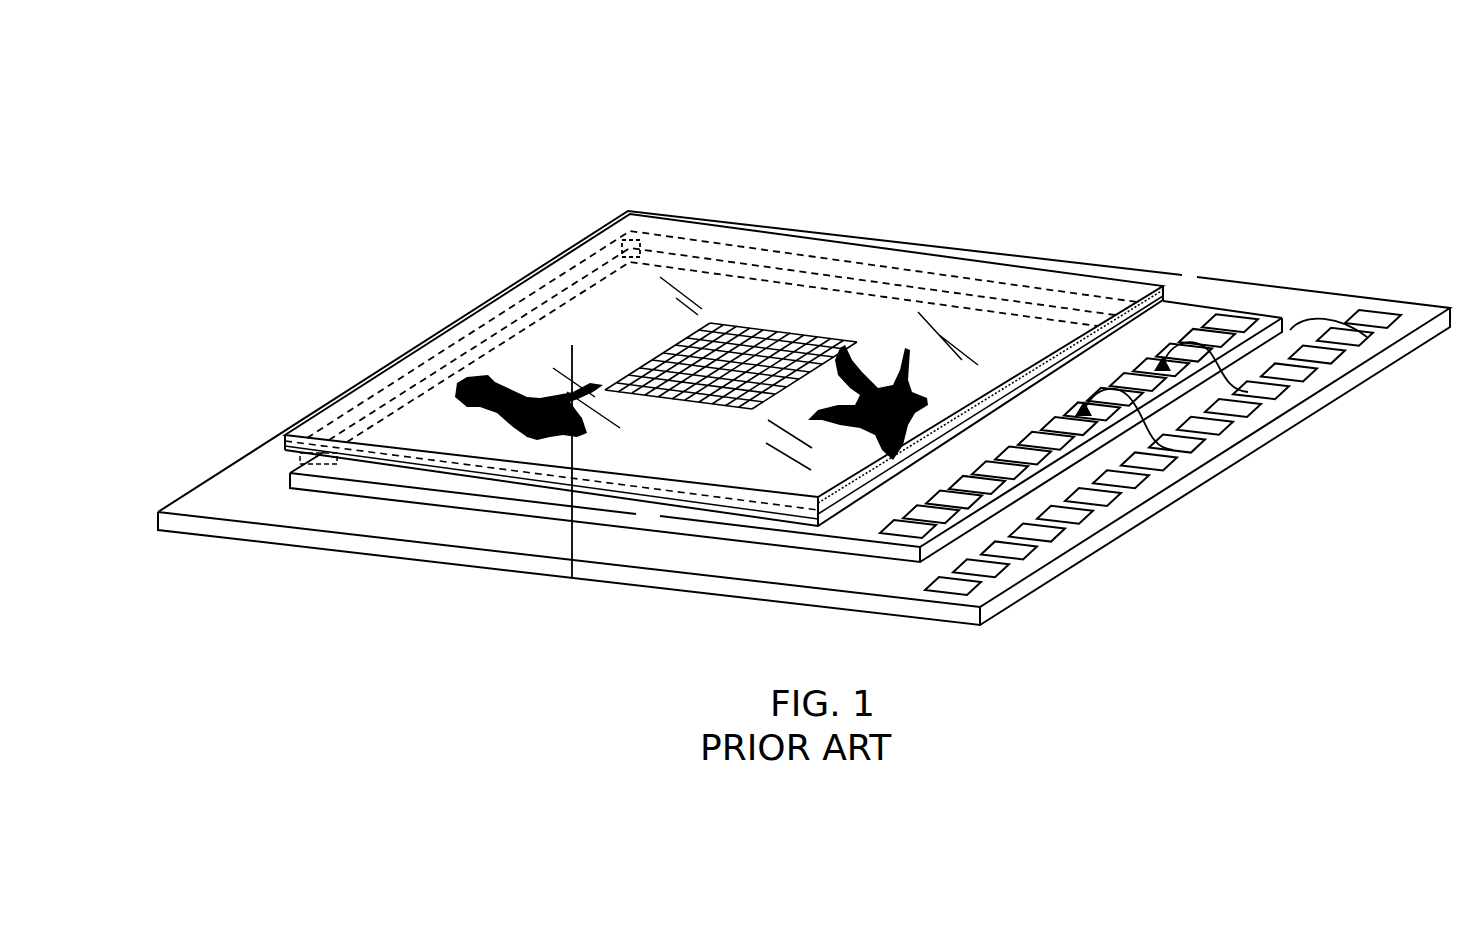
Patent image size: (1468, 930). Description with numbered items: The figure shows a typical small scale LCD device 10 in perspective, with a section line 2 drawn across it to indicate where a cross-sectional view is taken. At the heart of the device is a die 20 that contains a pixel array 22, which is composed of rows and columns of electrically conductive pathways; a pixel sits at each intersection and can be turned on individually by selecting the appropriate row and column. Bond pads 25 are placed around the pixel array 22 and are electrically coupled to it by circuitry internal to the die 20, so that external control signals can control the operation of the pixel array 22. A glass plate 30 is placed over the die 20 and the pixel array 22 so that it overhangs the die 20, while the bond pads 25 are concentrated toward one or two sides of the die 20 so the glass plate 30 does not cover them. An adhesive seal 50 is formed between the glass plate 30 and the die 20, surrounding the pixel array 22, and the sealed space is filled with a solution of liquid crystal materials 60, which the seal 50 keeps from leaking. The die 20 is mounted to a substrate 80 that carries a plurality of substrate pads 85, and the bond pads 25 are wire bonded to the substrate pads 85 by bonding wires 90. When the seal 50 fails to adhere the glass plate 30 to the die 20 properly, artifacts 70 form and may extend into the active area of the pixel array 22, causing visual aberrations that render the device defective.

The small scale LCD device 10 is at (348, 118).
The die 20 is at (1179, 317).
The pixel array 22 is at (752, 328).
The bond pads 25 is at (1222, 317).
The glass plate 30 is at (1102, 263).
The adhesive seal 50 is at (410, 478).
The liquid crystal materials 60 is at (985, 295).
The artifacts 70 is at (474, 385).
The substrate 80 is at (1068, 570).
The substrate pads 85 is at (1368, 310).
The bonding wires 90 is at (1367, 337).
The section line 2- 2 is at (632, 534).